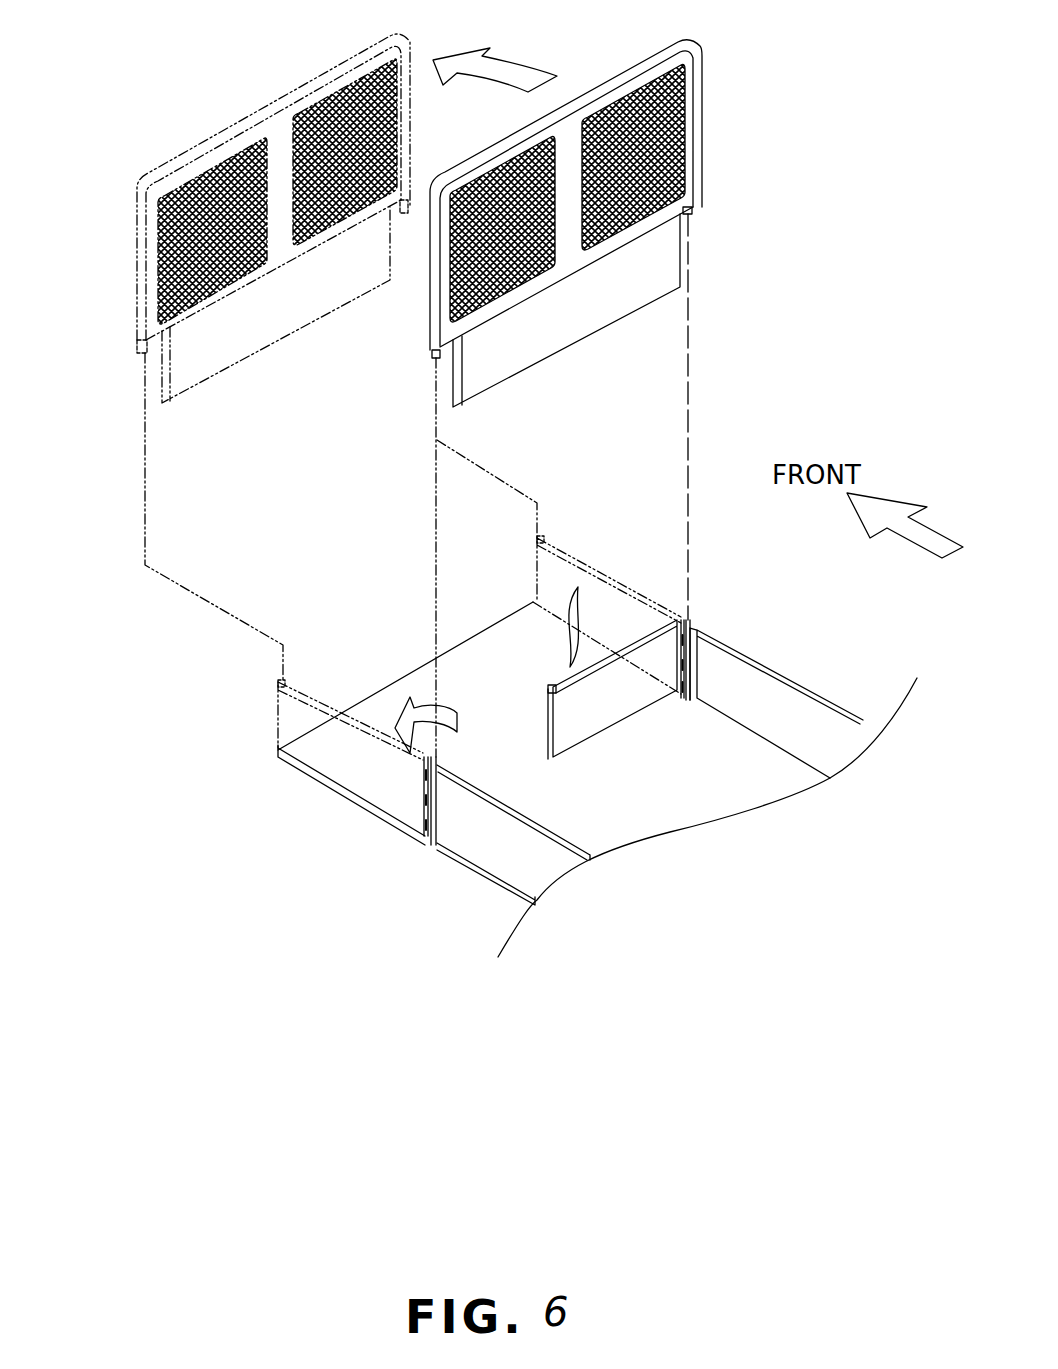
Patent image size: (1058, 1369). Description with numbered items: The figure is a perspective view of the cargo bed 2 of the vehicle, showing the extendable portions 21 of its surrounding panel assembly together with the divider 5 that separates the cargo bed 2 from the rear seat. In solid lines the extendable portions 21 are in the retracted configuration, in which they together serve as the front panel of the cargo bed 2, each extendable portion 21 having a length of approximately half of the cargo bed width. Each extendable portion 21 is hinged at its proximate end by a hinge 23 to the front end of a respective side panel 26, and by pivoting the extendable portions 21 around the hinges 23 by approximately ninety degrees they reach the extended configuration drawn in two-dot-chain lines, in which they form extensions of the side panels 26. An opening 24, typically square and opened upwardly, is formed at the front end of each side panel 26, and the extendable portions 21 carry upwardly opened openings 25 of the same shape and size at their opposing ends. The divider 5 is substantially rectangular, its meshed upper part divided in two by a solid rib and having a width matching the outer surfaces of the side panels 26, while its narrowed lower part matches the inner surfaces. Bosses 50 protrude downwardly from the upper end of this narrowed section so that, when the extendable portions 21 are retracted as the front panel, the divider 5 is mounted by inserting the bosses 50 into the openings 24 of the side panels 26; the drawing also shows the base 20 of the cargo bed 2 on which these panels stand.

The cargo bed 2 is at (450, 862).
The divider 5 is at (250, 107).
The floor board 20 is at (748, 808).
The extendable portion 21 is at (650, 632).
The hinge 23 is at (688, 620).
The opening 24 is at (700, 632).
The opening 25 is at (540, 535).
The side panel 26 is at (810, 690).
The boss 50 is at (138, 350).